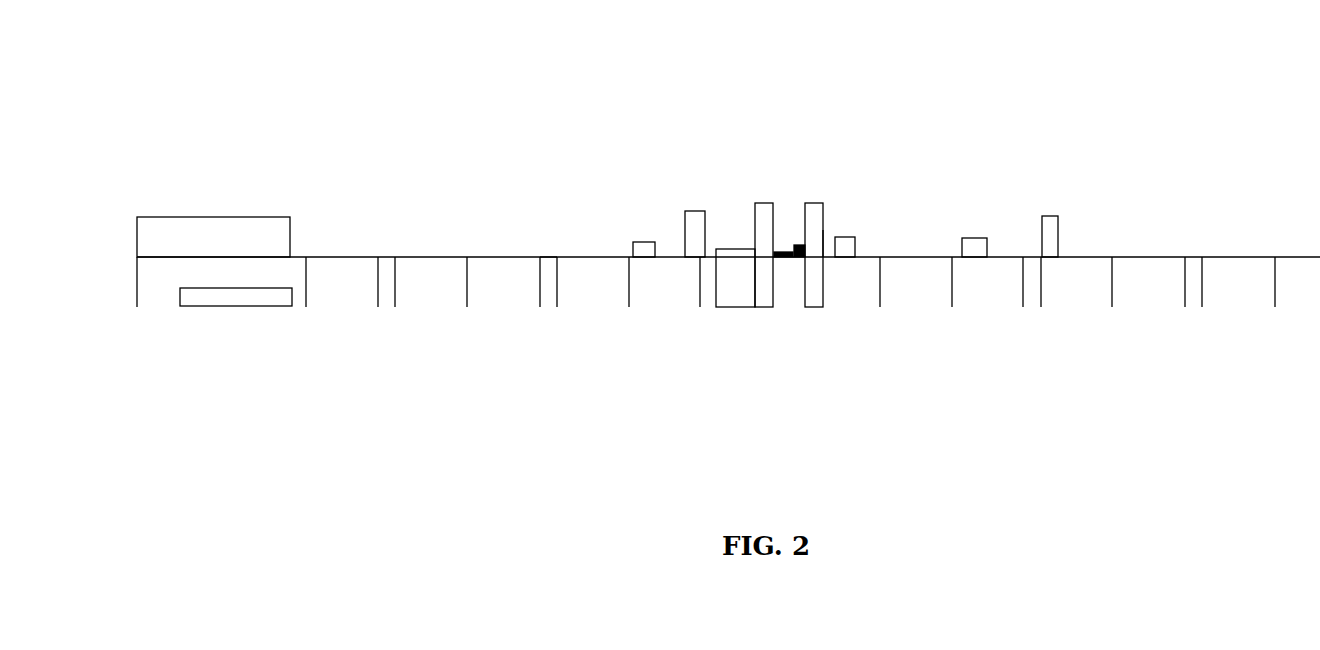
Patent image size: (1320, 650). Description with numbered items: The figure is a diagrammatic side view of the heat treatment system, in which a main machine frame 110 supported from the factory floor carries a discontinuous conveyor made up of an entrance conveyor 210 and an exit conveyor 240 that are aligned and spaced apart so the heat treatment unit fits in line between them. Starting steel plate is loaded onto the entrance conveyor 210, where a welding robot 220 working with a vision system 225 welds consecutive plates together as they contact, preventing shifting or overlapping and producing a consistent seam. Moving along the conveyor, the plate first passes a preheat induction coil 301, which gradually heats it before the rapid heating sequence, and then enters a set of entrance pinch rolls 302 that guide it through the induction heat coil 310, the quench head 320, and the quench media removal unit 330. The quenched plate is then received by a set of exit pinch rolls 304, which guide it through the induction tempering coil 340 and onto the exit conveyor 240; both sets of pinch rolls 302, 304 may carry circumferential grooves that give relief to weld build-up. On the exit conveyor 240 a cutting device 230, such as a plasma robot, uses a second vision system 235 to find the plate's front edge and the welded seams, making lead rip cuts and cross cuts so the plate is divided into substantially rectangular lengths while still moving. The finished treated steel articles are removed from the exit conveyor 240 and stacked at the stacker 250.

The main machine frame 110 is at (548, 303).
The entrance conveyor 210 is at (1011, 255).
The welding robot 220 is at (972, 235).
The vision system 225 is at (1053, 215).
The cutting device 230 is at (637, 242).
The vision system 235 is at (685, 211).
The exit conveyor 240 is at (552, 257).
The stacker 250 is at (238, 307).
The preheat induction coil 301 is at (852, 238).
The entrance pinch rolls 302 is at (826, 250).
The exit pinch rolls 304 is at (762, 210).
The induction heat coil 310 is at (815, 212).
The quench head 320 is at (800, 245).
The quench media removal unit 330 is at (783, 250).
The induction tempering coil 340 is at (735, 248).